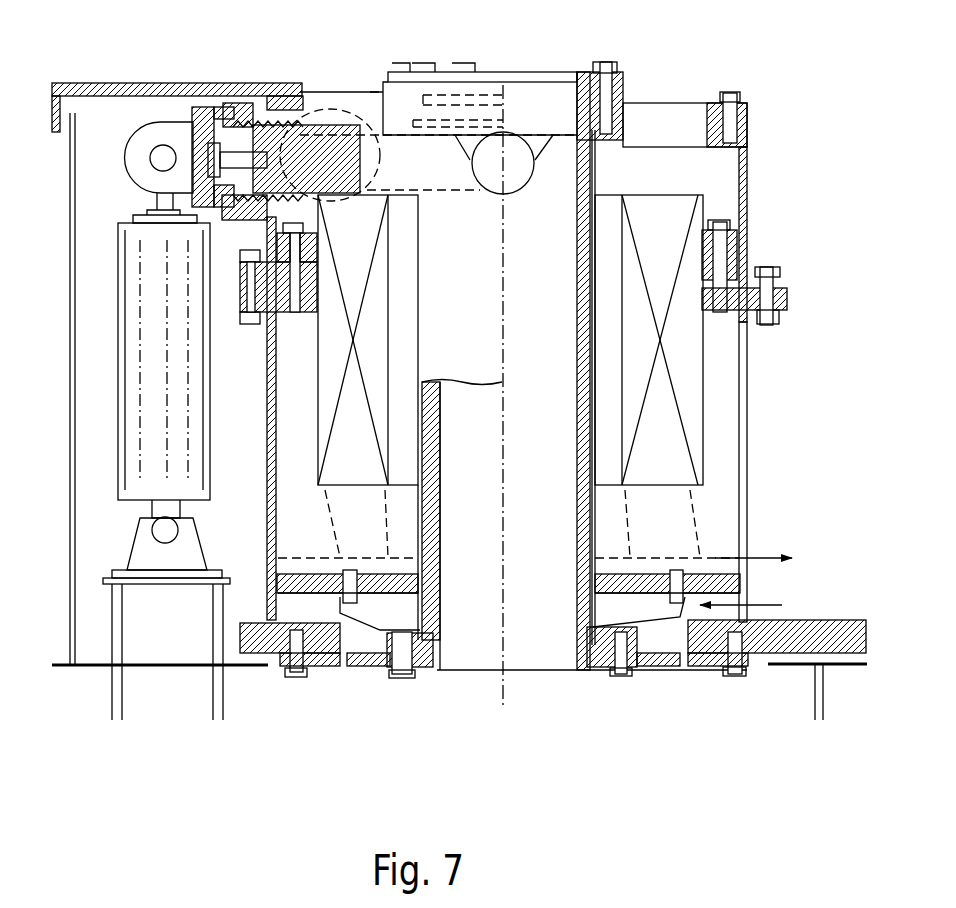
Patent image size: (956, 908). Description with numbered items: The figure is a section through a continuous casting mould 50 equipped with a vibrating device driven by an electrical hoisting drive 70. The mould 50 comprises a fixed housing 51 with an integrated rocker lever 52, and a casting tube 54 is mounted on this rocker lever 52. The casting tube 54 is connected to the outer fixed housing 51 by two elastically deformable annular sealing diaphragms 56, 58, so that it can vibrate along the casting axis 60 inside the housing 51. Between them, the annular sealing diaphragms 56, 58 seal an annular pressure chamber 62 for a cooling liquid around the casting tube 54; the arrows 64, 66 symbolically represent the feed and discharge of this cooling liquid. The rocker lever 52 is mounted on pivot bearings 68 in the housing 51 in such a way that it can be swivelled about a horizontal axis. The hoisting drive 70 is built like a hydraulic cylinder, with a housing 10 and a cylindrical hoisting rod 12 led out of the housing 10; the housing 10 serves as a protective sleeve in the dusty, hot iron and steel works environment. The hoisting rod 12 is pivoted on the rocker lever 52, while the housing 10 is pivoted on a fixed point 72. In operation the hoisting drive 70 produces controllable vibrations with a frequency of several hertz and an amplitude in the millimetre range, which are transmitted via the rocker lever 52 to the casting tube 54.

The housing 10 is at (130, 458).
The hoisting rod 12 is at (150, 207).
The continuous casting mould 50 is at (772, 112).
The fixed housing 51 is at (745, 198).
The rocker lever 52 is at (367, 92).
The casting tube 54 is at (573, 452).
The annular sealing diaphragm 56 is at (370, 678).
The annular sealing diaphragm 58 is at (658, 107).
The casting axis 60 is at (506, 703).
The annular pressure chamber 62 is at (363, 536).
The arrow 64 is at (772, 605).
The arrow 66 is at (787, 555).
The pivot bearing 68 is at (318, 92).
The hoisting drive 70 is at (114, 346).
The fixed point 72 is at (128, 600).